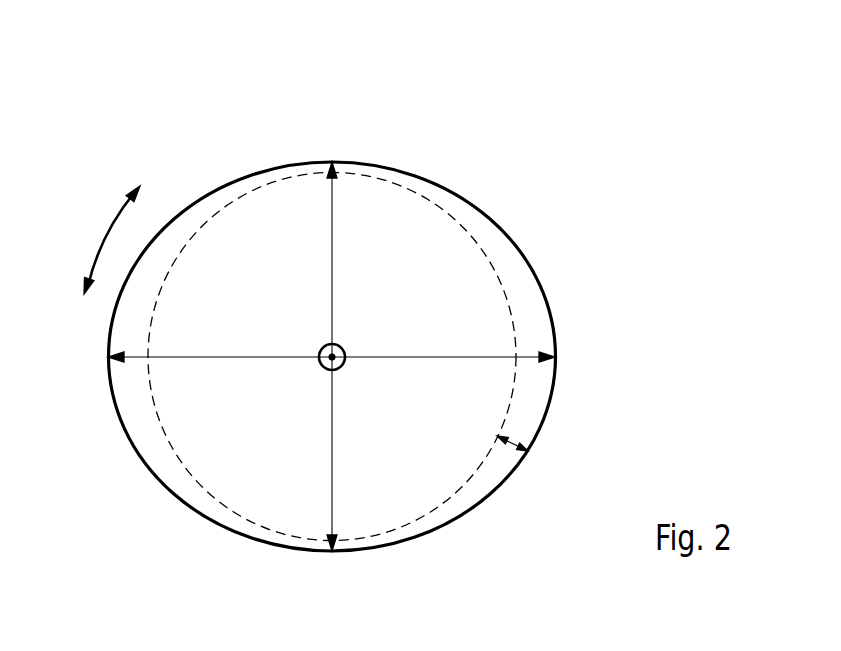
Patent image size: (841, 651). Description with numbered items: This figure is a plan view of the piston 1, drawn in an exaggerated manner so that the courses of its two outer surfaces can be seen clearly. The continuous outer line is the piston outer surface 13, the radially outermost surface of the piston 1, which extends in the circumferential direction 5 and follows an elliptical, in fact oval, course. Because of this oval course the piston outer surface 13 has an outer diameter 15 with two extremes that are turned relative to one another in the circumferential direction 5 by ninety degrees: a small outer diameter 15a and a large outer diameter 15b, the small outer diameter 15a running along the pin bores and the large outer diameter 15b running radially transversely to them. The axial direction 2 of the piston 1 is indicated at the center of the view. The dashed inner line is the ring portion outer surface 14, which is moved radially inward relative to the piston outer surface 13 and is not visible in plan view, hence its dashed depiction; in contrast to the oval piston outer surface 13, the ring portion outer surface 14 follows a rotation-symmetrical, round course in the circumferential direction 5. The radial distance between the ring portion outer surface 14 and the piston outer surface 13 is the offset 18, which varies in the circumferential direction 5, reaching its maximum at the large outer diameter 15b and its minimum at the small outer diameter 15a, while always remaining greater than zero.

The piston 1 is at (652, 178).
The axial direction 2 is at (339, 346).
The circumferential direction 5 is at (104, 236).
The piston outer surface 13 is at (506, 232).
The ring portion outer surface 14 is at (498, 274).
The outer diameter 15 is at (389, 331).
The small outer diameter 15a is at (333, 212).
The large outer diameter 15b is at (527, 354).
The offset 18 is at (510, 444).